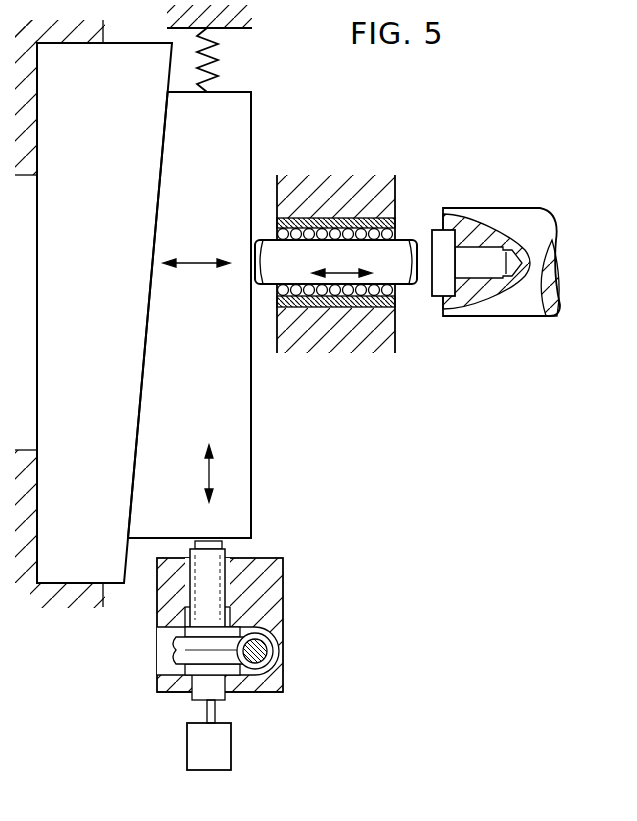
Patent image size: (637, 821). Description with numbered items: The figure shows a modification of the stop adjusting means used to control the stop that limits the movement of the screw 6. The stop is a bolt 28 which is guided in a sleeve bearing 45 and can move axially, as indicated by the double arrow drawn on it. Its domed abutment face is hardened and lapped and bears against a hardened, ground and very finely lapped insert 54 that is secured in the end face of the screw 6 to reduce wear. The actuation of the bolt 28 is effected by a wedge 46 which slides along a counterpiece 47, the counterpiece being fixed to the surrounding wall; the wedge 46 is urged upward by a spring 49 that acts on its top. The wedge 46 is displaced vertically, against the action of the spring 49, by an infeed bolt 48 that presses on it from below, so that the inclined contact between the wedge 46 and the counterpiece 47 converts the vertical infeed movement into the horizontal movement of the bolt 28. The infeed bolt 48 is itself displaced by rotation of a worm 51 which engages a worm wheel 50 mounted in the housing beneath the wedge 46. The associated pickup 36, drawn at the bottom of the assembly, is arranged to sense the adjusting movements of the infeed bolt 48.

The screw 6 is at (498, 218).
The bolt 28 is at (347, 252).
The pickup 36 is at (220, 748).
The sleeve bearing 45 is at (303, 222).
The wedge 46 is at (232, 390).
The counterpiece 47 is at (73, 550).
The infeed bolt 48 is at (205, 589).
The spring 49 is at (218, 57).
The worm wheel 50 is at (172, 648).
The worm 51 is at (258, 665).
The insert 54 is at (473, 256).